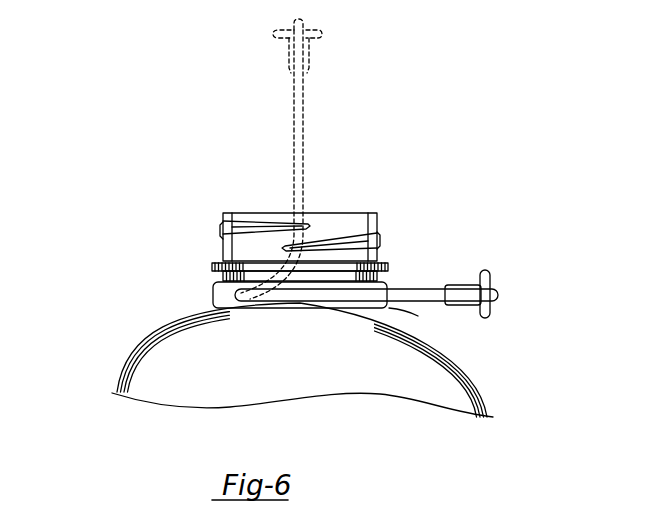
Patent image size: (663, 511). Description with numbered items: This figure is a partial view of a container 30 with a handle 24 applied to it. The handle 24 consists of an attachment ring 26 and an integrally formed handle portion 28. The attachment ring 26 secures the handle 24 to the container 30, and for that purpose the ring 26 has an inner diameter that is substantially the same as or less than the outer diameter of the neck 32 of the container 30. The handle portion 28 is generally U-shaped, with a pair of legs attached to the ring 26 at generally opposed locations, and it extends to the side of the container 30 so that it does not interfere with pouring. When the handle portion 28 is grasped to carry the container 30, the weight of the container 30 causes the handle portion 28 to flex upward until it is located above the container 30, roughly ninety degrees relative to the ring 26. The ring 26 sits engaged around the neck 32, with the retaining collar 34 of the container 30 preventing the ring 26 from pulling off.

The handle 24 is at (499, 289).
The attachment ring 26 is at (213, 296).
The handle portion 28 is at (438, 297).
The container 30 is at (118, 372).
The neck 32 is at (393, 308).
The retaining collar 34 is at (212, 271).